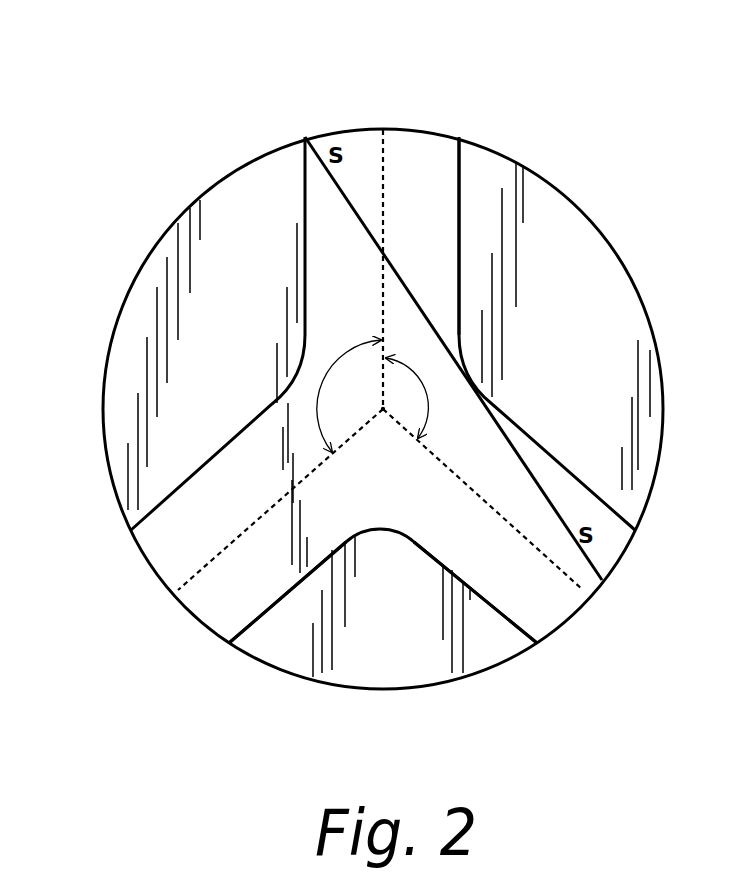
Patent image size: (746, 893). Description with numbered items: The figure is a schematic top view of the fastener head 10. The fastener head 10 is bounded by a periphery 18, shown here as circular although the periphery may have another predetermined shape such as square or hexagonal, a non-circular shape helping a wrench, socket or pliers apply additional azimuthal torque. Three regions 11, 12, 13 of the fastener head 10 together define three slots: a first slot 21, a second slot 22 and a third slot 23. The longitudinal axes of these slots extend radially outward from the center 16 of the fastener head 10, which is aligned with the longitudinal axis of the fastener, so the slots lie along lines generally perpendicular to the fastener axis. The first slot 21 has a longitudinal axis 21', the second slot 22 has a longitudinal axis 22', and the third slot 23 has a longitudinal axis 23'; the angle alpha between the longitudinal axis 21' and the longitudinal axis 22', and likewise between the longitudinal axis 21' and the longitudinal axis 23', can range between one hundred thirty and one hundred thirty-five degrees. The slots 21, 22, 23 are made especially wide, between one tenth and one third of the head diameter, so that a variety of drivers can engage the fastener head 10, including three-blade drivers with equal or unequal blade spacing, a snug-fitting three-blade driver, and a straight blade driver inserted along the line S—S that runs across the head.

The fastener head 10 is at (248, 702).
The first region 11 is at (580, 320).
The second region 12 is at (378, 647).
The third region 13 is at (172, 291).
The center 16 is at (384, 412).
The periphery 18 is at (577, 202).
The first slot 21 is at (471, 191).
The longitudinal axis of first slot 21' is at (417, 224).
The second slot 22 is at (229, 616).
The longitudinal axis of second slot 22' is at (230, 500).
The third slot 23 is at (521, 631).
The longitudinal axis of third slot 23' is at (542, 502).